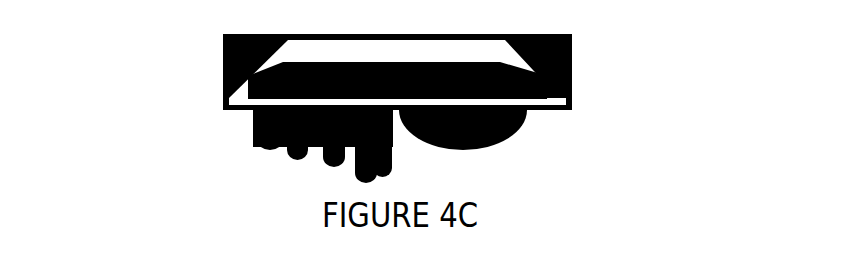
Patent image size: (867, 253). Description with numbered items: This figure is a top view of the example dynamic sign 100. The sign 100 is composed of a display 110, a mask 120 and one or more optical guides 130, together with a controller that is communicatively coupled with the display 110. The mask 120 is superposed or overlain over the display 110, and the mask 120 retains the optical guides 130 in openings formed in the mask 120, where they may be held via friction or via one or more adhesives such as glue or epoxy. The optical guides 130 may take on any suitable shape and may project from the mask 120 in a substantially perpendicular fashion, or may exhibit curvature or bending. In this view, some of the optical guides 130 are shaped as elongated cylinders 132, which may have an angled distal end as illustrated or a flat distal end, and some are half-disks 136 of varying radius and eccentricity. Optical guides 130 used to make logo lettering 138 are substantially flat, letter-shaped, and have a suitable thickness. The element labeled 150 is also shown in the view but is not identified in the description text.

The dynamic sign 100 is at (388, 121).
The display 110 is at (332, 58).
The mask 120 is at (245, 110).
The optical guides 130 is at (432, 172).
The elongated cylinders 132 is at (323, 155).
The half-disks 136 is at (520, 128).
The logo lettering 138 is at (528, 115).
The cover block 150 is at (223, 79).